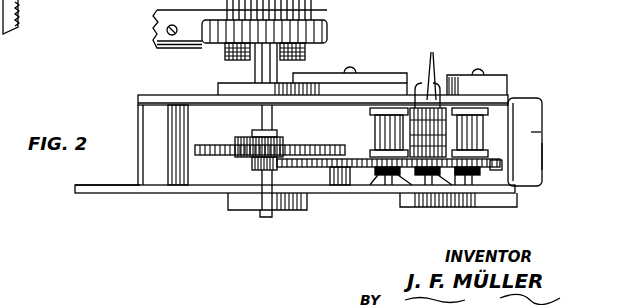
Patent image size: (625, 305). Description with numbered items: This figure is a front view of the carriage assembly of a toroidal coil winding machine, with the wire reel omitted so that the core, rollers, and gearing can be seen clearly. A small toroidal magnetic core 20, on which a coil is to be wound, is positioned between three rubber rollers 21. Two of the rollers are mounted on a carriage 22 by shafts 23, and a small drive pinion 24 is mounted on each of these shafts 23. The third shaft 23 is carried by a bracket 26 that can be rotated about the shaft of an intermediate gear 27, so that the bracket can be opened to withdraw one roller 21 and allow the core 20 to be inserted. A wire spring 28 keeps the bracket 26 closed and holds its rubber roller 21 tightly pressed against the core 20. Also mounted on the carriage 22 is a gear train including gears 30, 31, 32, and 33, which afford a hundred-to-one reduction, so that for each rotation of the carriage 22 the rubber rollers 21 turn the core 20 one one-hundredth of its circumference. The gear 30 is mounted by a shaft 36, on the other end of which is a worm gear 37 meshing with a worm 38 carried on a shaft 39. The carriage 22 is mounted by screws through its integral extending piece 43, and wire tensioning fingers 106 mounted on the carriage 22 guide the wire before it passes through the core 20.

The toroidal magnetic core 20 is at (418, 100).
The rubber rollers 21 is at (378, 123).
The carriage 22 is at (208, 193).
The shafts 23 is at (395, 175).
The drive pinion 24 is at (381, 175).
The bracket 26 is at (535, 172).
The intermediate gear 27 is at (497, 170).
The wire spring 28 is at (500, 130).
The gear 30 is at (292, 148).
The gear 31 is at (252, 162).
The gear 32 is at (212, 145).
The gear 33 is at (359, 158).
The shaft 36 is at (278, 69).
The worm gear 37 is at (328, 33).
The worm 38 is at (225, 58).
The shaft 39 is at (175, 48).
The integral extending piece 43 is at (110, 193).
The wire tensioning fingers 106 is at (437, 100).